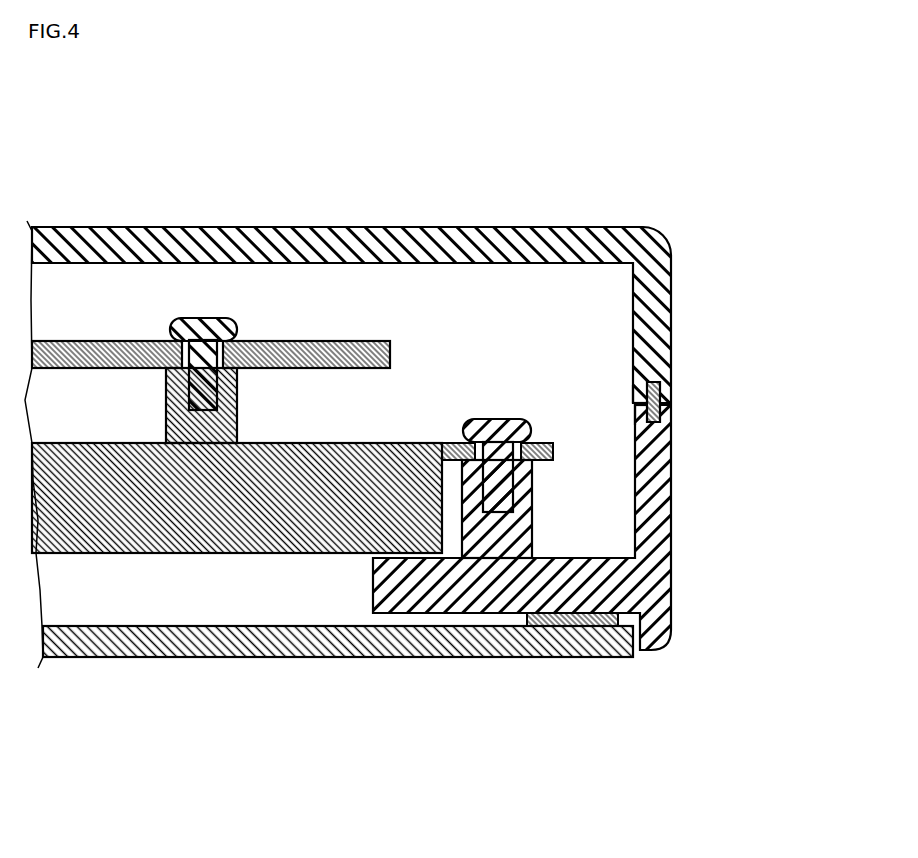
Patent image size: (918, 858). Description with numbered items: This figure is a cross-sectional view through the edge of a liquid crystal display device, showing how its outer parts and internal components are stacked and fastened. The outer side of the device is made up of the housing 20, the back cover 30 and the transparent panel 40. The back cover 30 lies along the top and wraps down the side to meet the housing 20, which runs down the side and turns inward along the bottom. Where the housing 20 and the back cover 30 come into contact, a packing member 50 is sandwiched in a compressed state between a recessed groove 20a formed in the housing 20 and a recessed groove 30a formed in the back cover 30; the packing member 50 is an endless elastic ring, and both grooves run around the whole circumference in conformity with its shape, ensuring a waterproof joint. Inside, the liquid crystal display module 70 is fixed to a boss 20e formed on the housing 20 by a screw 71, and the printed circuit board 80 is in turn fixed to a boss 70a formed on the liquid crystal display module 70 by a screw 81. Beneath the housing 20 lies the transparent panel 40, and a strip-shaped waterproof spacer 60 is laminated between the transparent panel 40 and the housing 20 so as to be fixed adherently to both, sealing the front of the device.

The housing 20 is at (663, 527).
The recessed groove 20a is at (662, 424).
The boss 20e is at (483, 537).
The back cover 30 is at (653, 273).
The recessed groove 30a is at (655, 380).
The transparent panel 40 is at (358, 635).
The packing member 50 is at (662, 400).
The waterproof spacer 60 is at (573, 635).
The liquid crystal display module 70 is at (122, 515).
The boss 70a is at (186, 405).
The screw 71 is at (493, 420).
The printed circuit board 80 is at (138, 353).
The screw 81 is at (201, 328).